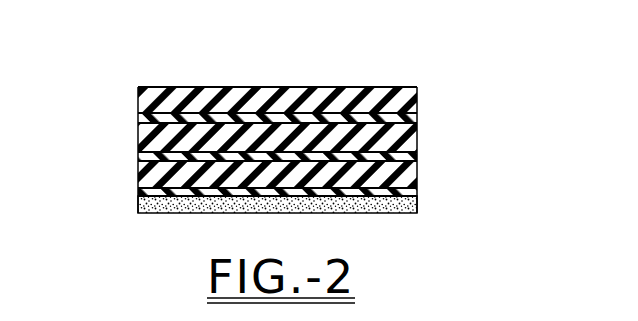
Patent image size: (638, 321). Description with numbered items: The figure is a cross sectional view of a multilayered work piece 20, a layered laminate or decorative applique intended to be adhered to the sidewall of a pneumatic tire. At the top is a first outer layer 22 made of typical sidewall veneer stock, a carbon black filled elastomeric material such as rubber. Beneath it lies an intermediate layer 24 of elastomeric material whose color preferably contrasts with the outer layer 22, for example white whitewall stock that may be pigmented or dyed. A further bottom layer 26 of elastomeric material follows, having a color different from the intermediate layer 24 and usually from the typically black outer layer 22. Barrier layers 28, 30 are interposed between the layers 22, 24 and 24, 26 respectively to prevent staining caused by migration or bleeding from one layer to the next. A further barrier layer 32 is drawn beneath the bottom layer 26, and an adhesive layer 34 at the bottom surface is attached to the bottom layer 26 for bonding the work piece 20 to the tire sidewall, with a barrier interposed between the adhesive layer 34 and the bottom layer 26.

The work piece 20 is at (272, 125).
The first outer layer 22 is at (138, 98).
The intermediate layer 24 is at (138, 143).
The bottom layer 26 is at (138, 181).
The barrier layer 28 is at (417, 118).
The barrier layer 30 is at (417, 155).
The third intermediate layer 32 is at (417, 192).
The adhesive layer 34 is at (138, 205).